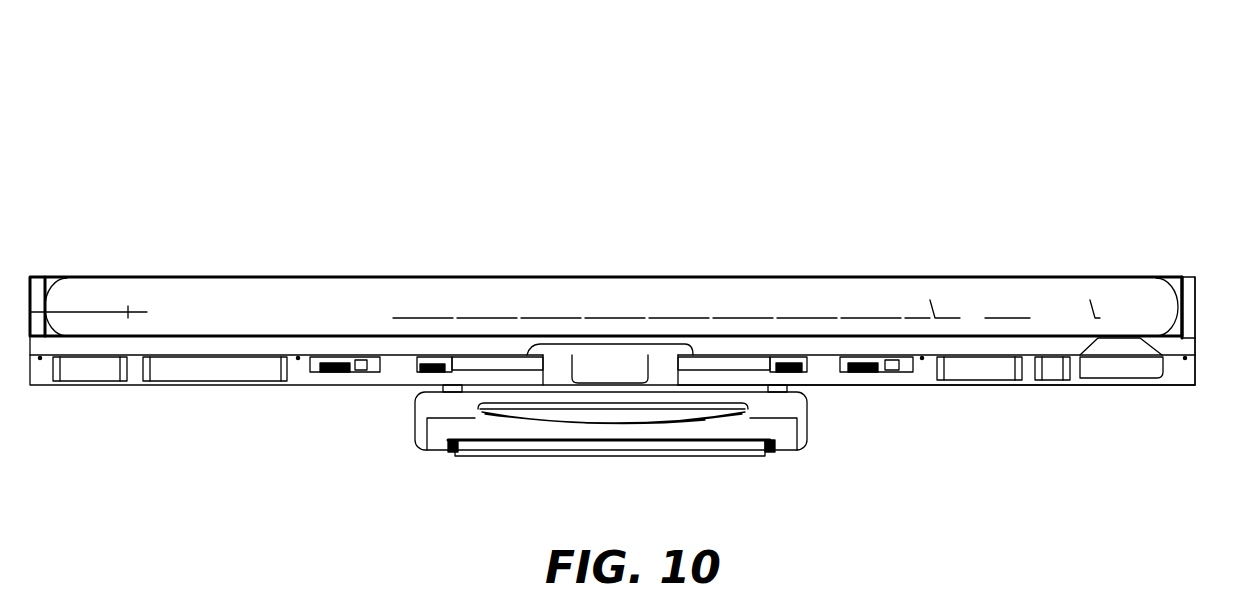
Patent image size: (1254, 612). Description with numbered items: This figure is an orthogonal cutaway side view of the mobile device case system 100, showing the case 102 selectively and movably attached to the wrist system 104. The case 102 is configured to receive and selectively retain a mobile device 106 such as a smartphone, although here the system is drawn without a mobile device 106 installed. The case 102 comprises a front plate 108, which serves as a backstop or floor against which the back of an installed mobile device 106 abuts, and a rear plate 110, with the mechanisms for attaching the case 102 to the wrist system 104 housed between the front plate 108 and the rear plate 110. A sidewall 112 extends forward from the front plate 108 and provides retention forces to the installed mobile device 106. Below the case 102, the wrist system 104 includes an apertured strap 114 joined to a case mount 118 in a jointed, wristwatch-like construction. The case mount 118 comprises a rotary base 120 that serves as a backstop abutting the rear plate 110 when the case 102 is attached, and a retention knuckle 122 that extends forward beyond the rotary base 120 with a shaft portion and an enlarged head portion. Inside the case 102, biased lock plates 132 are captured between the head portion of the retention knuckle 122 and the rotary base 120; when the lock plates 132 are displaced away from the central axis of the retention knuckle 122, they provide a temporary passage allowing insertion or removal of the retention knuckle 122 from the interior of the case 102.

The mobile device case system 100 is at (963, 100).
The case 102 is at (1188, 275).
The wrist system 104 is at (810, 413).
The mobile device 106 is at (170, 297).
The front plate 108 is at (245, 345).
The rear plate 110 is at (933, 385).
The sidewall 112 is at (1192, 305).
The apertured strap 114 is at (743, 447).
The case mount 118 is at (440, 436).
The rotary base 120 is at (425, 394).
The retention knuckle 122 is at (660, 352).
The lock plates 132 is at (503, 360).